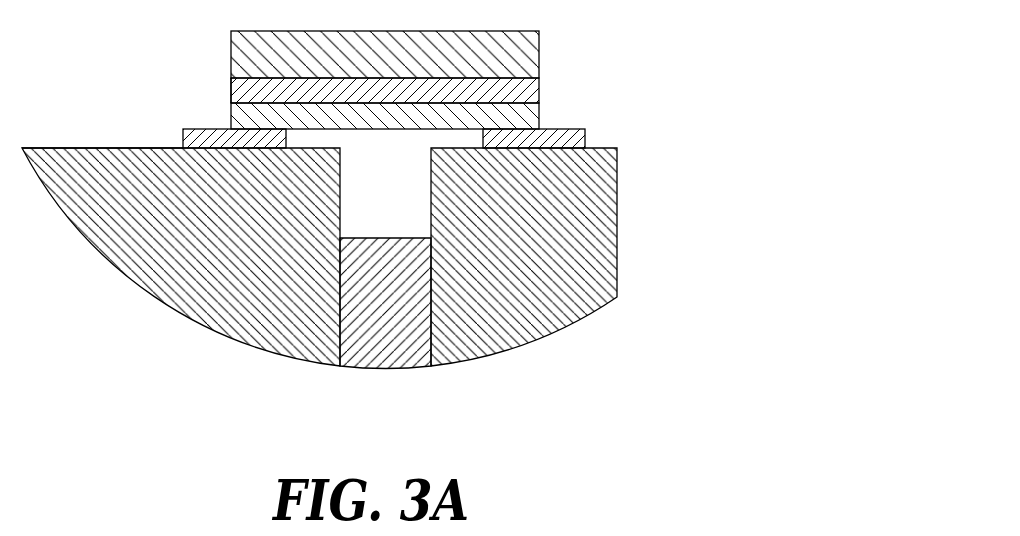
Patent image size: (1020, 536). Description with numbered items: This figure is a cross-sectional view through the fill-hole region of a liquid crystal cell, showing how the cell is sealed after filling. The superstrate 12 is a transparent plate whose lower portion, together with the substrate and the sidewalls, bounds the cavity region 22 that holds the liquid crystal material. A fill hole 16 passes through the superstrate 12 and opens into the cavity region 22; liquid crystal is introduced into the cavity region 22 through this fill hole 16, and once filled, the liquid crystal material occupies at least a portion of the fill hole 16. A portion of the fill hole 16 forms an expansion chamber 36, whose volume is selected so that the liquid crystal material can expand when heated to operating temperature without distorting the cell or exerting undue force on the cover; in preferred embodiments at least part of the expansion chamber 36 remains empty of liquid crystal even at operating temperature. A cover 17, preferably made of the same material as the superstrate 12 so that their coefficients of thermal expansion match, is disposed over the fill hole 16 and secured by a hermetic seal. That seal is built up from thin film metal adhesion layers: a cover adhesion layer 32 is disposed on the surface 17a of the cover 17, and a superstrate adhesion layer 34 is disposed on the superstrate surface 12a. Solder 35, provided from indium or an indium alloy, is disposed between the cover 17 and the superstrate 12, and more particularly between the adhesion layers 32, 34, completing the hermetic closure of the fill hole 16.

The superstrate 12 is at (617, 194).
The superstrate surface 12a is at (42, 147).
The fill hole 16 is at (415, 214).
The cover 17 is at (539, 47).
The cover surface 17a is at (252, 80).
The cavity region 22 is at (391, 330).
The cover adhesion layer 32 is at (539, 83).
The superstrate adhesion layer 34 is at (183, 129).
The solder 35 is at (539, 118).
The expansion chamber 36 is at (343, 150).